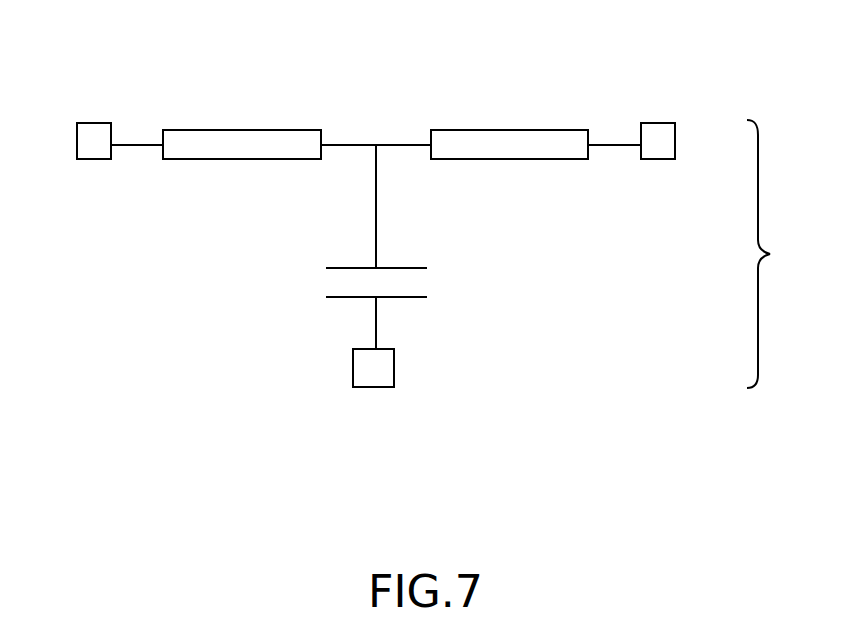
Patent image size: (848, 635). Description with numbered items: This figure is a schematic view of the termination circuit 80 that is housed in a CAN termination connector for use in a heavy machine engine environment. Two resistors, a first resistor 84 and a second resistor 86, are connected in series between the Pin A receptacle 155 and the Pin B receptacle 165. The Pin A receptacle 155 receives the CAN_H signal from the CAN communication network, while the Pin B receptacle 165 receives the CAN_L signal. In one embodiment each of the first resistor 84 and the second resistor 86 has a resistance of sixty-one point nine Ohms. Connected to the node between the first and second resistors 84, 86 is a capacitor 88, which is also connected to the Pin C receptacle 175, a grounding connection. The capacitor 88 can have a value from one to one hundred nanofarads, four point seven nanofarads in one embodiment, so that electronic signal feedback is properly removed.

The Pin A receptacle 155 is at (93, 123).
The first resistor 84 is at (220, 130).
The second resistor 86 is at (510, 130).
The Pin B receptacle 165 is at (657, 123).
The capacitor 88 is at (427, 283).
The Pin C receptacle 175 is at (395, 363).
The termination circuit 80 is at (774, 254).